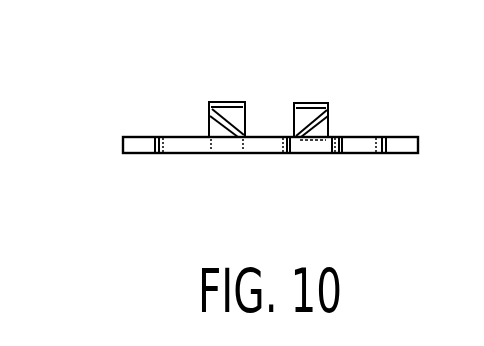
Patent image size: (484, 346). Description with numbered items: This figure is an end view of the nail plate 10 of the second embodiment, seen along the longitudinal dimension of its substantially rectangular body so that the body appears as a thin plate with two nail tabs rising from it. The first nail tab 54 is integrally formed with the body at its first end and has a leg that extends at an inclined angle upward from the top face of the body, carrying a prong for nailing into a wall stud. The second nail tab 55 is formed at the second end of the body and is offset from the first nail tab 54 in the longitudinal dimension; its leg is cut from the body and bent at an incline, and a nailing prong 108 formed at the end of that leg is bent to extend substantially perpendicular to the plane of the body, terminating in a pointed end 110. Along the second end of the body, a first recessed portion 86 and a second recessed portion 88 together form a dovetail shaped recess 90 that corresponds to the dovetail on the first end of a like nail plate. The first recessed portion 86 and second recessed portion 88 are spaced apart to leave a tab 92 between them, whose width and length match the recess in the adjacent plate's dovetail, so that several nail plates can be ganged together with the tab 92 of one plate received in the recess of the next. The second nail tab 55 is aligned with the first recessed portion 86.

The rail assembly 10 is at (112, 173).
The nail tab 54 is at (228, 90).
The second nail tab 55 is at (314, 91).
The first recessed portion 86 is at (352, 163).
The second recessed portion 88 is at (179, 135).
The dovetail shaped recess 90 is at (279, 133).
The tab 92 is at (218, 143).
The nailing prong 108 is at (324, 107).
The pointed end 110 is at (302, 152).